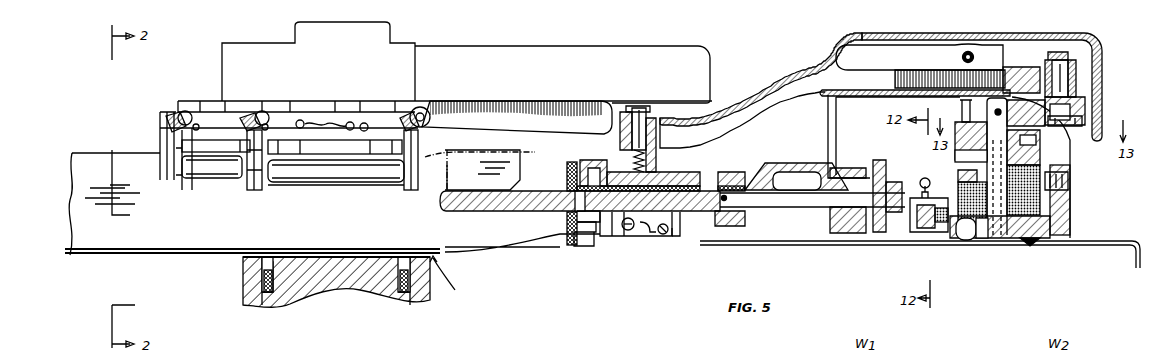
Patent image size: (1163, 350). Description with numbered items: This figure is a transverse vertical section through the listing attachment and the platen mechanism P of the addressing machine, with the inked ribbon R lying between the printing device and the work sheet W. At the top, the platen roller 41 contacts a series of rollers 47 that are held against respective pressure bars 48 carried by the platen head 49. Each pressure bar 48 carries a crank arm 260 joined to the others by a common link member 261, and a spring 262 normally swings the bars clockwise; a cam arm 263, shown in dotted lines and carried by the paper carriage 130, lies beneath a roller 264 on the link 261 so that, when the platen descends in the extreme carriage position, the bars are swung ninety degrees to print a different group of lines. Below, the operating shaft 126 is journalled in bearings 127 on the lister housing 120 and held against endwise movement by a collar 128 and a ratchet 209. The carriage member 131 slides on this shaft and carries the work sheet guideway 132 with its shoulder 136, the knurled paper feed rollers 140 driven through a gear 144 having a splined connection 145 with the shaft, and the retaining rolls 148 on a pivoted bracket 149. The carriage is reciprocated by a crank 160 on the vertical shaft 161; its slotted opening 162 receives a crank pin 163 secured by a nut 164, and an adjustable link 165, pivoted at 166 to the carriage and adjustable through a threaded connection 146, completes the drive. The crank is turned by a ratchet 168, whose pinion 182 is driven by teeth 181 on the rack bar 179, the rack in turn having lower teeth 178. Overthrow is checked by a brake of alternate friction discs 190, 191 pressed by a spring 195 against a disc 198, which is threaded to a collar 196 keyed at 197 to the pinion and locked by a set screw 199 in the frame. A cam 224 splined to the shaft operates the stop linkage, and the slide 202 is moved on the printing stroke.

The platen head 49 is at (225, 58).
The pressure bar 48 is at (160, 125).
The roller 47 is at (254, 190).
The platen roller 41 is at (344, 186).
The crank arm 260 is at (180, 114).
The link member 261 is at (285, 118).
The spring 262 is at (352, 122).
The cam arm 263 is at (410, 198).
The roller 264 is at (426, 108).
The lister housing 120 is at (836, 118).
The operating shaft 126 is at (520, 213).
The bearing 127 is at (752, 166).
The collar 128 is at (735, 172).
The paper carriage 130 is at (680, 238).
The carriage member 131 is at (656, 180).
The work sheet guideway 132 is at (598, 235).
The shoulder 136 is at (585, 248).
The paper feed roller 140 is at (568, 163).
The gear 144 is at (941, 189).
The splined connection 145 is at (575, 180).
The threaded connection 146 is at (945, 72).
The roll 148 is at (565, 245).
The bracket 149 is at (645, 255).
The crank 160 is at (975, 115).
The shaft 161 is at (1003, 108).
The slotted opening 162 is at (1078, 105).
The crank pin 163 is at (1080, 95).
The nut 164 is at (1082, 120).
The adjustable link 165 is at (795, 72).
The pivotal connection 166 is at (640, 116).
The ratchet 168 is at (970, 125).
The teeth 178 is at (1036, 142).
The rack bar 179 is at (1040, 135).
The teeth 181 is at (1040, 175).
The pinion 182 is at (970, 155).
The friction disc 190 is at (970, 240).
The friction disc 191 is at (985, 240).
The spring 195 is at (1035, 244).
The collar 196 is at (968, 178).
The key 197 is at (1026, 106).
The disc 198 is at (956, 174).
The set screw 199 is at (1070, 182).
The slide 202 is at (925, 234).
The ratchet 209 is at (880, 234).
The cam 224 is at (960, 240).
The work sheet W is at (140, 248).
The die D is at (315, 258).
The inked ribbon R is at (447, 276).
The platen mechanism P is at (330, 185).